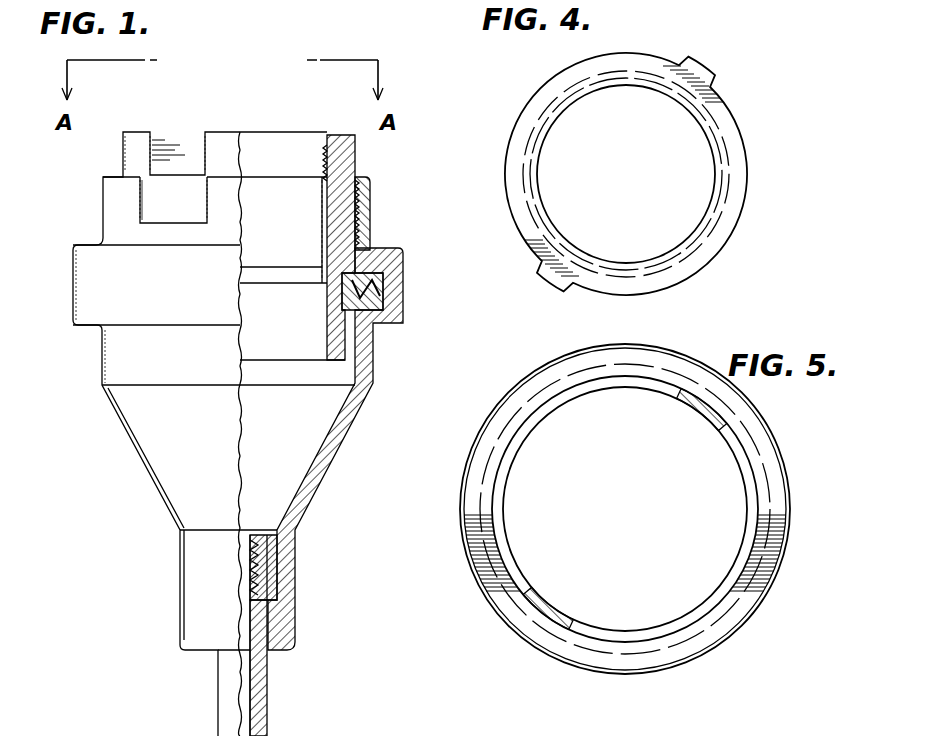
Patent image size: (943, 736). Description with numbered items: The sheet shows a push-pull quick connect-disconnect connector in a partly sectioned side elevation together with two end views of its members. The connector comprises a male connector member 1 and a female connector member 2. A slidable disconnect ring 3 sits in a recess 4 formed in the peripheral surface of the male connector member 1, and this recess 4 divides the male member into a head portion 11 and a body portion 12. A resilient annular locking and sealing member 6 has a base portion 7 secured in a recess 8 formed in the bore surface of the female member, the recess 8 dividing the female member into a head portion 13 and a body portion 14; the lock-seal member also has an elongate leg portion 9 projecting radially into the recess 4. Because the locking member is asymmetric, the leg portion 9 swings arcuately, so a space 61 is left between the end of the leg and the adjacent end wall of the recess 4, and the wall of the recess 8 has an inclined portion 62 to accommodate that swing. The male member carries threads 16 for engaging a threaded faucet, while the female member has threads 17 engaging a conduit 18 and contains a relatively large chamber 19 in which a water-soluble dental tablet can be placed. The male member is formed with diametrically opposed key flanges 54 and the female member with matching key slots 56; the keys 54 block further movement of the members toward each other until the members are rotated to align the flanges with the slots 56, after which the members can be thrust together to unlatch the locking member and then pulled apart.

In FIG. 1, the male connector member 1 is at (373, 147).
In FIG. 4, the male connector member 1 is at (749, 173).
In FIG. 1, the female connector member 2 is at (400, 249).
In FIG. 5, the female connector member 2 is at (792, 547).
In FIG. 1, the slidable disconnect ring 3 is at (346, 240).
In FIG. 1, the recess 4 is at (340, 283).
In FIG. 1, the resilient annular locking and sealing member 6 is at (356, 308).
In FIG. 1, the base portion 7 is at (384, 301).
In FIG. 1, the recess 8 is at (384, 280).
In FIG. 1, the leg portion 9 is at (342, 292).
In FIG. 1, the head portion 11 is at (348, 345).
In FIG. 1, the body portion 12 is at (328, 192).
In FIG. 1, the head portion 13 is at (357, 236).
In FIG. 1, the body portion 14 is at (362, 318).
In FIG. 1, the threads 16 is at (330, 147).
In FIG. 1, the threads 17 is at (283, 566).
In FIG. 1, the conduit 18 is at (268, 704).
In FIG. 1, the chamber 19 is at (283, 473).
In FIG. 1, the key flanges 54 is at (182, 143).
In FIG. 4, the key flanges 54 is at (700, 62).
In FIG. 1, the key slots 56 is at (155, 193).
In FIG. 5, the key slots 56 is at (676, 386).
In FIG. 1, the space 61 is at (351, 313).
In FIG. 1, the inclined portion 62 is at (360, 316).